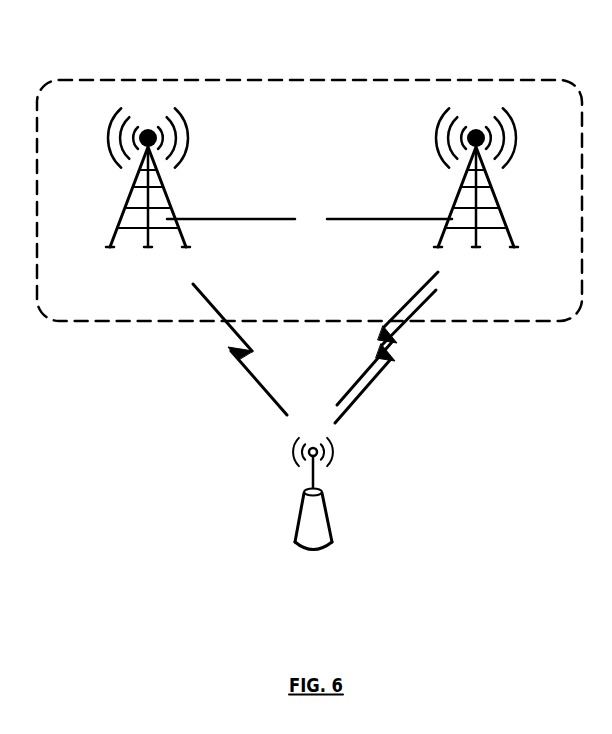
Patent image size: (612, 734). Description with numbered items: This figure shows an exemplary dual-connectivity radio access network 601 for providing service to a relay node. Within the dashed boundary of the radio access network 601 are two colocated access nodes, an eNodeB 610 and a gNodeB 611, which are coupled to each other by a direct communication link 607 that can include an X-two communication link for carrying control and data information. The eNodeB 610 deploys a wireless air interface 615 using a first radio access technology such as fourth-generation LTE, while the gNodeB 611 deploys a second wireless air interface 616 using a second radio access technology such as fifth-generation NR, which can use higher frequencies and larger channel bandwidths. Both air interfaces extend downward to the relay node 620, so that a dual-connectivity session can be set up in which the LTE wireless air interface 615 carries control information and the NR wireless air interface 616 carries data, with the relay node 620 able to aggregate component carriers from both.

The radio access network 601 is at (112, 78).
The direct communication link 607 is at (377, 220).
The eNodeB 610 is at (128, 212).
The gNodeB 611 is at (497, 211).
The wireless air interface 615 is at (232, 352).
The second wireless air interface 616 is at (414, 365).
The relay node 620 is at (296, 518).